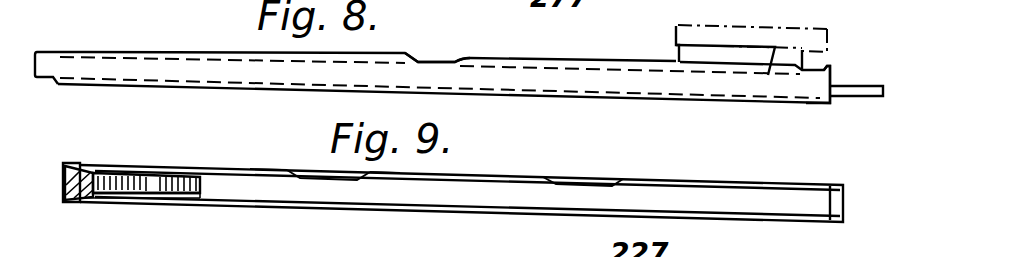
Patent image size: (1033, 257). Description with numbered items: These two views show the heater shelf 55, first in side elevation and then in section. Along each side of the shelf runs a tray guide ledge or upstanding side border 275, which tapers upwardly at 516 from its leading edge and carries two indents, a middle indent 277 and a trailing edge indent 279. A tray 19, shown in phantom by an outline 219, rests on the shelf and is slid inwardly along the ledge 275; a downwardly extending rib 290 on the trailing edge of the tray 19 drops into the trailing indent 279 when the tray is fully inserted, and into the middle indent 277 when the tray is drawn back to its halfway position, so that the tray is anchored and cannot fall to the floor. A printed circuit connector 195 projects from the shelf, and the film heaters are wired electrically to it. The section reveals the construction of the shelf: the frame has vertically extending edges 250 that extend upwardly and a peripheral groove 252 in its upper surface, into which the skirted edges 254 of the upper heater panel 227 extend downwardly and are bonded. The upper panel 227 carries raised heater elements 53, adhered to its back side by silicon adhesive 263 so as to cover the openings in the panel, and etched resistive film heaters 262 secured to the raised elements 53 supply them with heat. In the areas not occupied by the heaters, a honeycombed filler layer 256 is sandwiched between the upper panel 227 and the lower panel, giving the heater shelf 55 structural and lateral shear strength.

In FIG. 8, the tray 19 is at (675, 40).
In FIG. 9, the raised heater elements 53 is at (248, 168).
In FIG. 8, the heater shelf 55 is at (79, 85).
In FIG. 9, the heater shelf 55 is at (845, 202).
In FIG. 8, the printed circuit connector 195 is at (873, 63).
In FIG. 8, the phantom outline 219 is at (755, 14).
In FIG. 9, the upper heater panel 227 is at (627, 162).
In FIG. 8, the vertically extending edges 250 is at (830, 103).
In FIG. 9, the vertically extending edges 250 is at (63, 178).
In FIG. 9, the peripheral groove 252 is at (82, 199).
In FIG. 9, the skirted edges 254 is at (82, 175).
In FIG. 9, the honeycombed filler layer 256 is at (167, 198).
In FIG. 9, the etched resistive film heaters 262 is at (157, 192).
In FIG. 9, the silicon adhesive 263 is at (150, 192).
In FIG. 8, the tray guide ledges 275 is at (190, 33).
In FIG. 8, the middle indent 277 is at (460, 62).
In FIG. 8, the trailing edge indent 279 is at (806, 103).
In FIG. 8, the downwardly extending rib 290 is at (813, 62).
In FIG. 8, the upward taper 516 is at (93, 23).